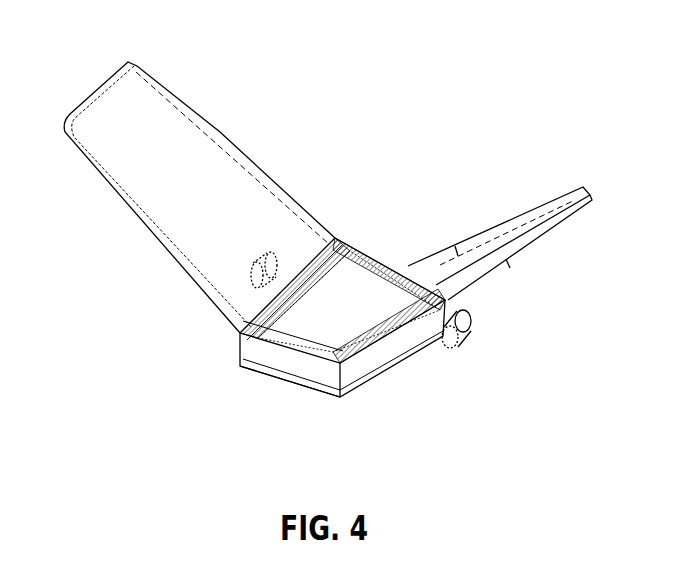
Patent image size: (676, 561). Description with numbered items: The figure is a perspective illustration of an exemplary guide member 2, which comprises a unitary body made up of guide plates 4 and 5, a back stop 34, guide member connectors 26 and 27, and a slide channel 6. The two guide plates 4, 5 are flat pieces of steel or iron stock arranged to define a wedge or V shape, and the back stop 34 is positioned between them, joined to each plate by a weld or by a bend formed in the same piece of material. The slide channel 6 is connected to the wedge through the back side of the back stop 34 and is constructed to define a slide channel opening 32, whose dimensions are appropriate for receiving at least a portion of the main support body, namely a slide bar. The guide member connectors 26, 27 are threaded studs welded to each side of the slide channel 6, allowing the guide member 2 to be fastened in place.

The guide member 2 is at (498, 85).
The guide plate 4 is at (140, 183).
The guide plate 5 is at (510, 242).
The slide channel 6 is at (370, 367).
The guide member connector 26 is at (470, 333).
The guide member connector 27 is at (293, 267).
The slide channel opening 32 is at (287, 362).
The back stop 34 is at (342, 296).